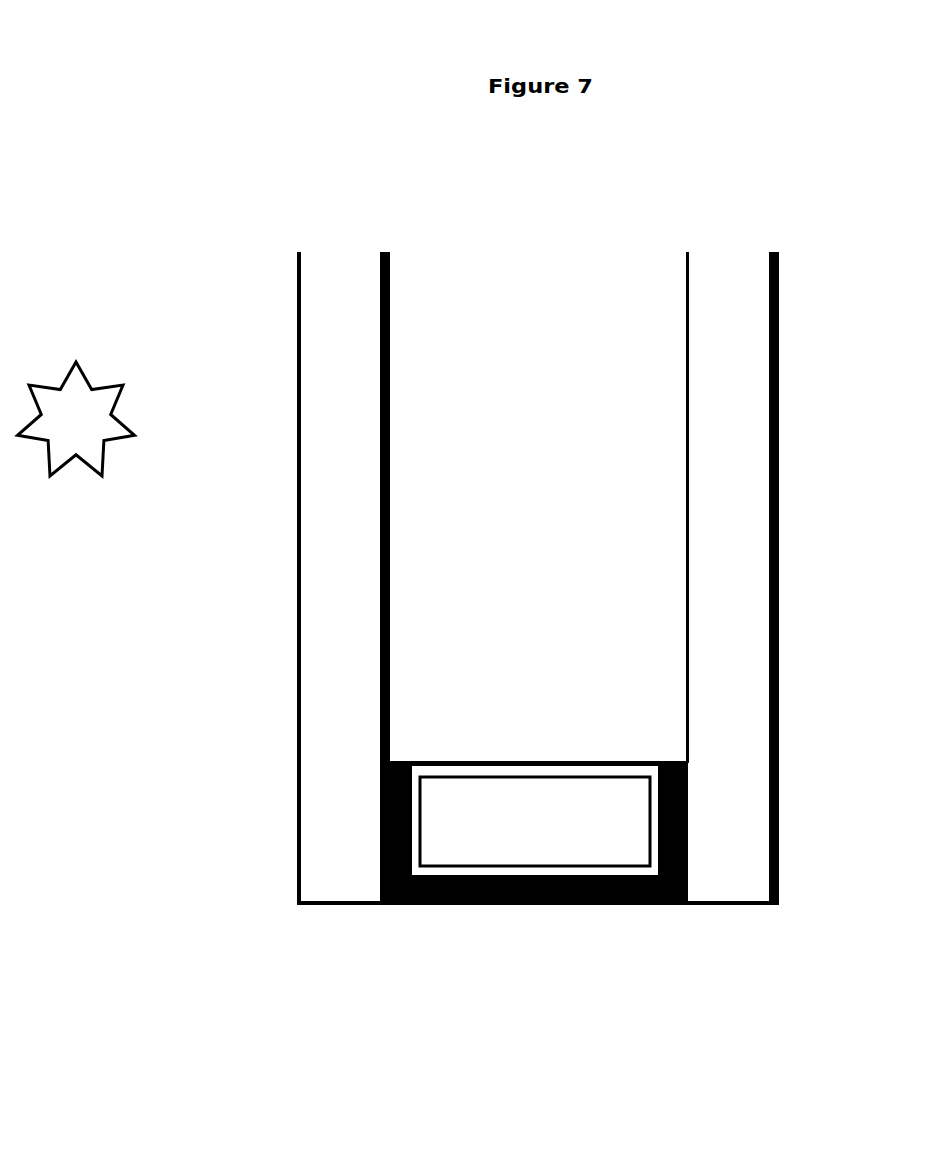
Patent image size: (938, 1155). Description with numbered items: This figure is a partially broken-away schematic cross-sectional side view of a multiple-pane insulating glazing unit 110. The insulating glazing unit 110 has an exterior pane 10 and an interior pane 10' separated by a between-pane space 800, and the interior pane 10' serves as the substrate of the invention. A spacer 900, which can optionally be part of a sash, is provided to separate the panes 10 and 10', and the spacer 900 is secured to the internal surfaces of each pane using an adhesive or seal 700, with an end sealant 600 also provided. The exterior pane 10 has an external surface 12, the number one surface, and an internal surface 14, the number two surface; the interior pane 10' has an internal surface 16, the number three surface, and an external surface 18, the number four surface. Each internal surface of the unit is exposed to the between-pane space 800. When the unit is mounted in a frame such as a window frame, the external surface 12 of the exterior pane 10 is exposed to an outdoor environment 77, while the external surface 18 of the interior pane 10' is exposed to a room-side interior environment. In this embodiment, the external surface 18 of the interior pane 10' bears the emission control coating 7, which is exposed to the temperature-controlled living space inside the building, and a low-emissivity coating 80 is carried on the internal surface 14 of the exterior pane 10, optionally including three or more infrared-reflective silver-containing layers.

The insulating glazing unit 110 is at (181, 107).
The external surface 12 is at (298, 250).
The internal surface 14 is at (383, 250).
The low-emissivity coating 80 is at (390, 382).
The internal surface 16 is at (685, 306).
The external surface 18 is at (770, 248).
The emission control coating 7 is at (779, 437).
The between-pane space 800 is at (576, 335).
The end sealant 600 is at (608, 905).
The adhesive or seal 700 is at (672, 762).
The spacer 900 is at (517, 840).
The exterior pane 10 is at (333, 619).
The interior pane 10' is at (743, 605).
The outdoor environment 77 is at (76, 419).